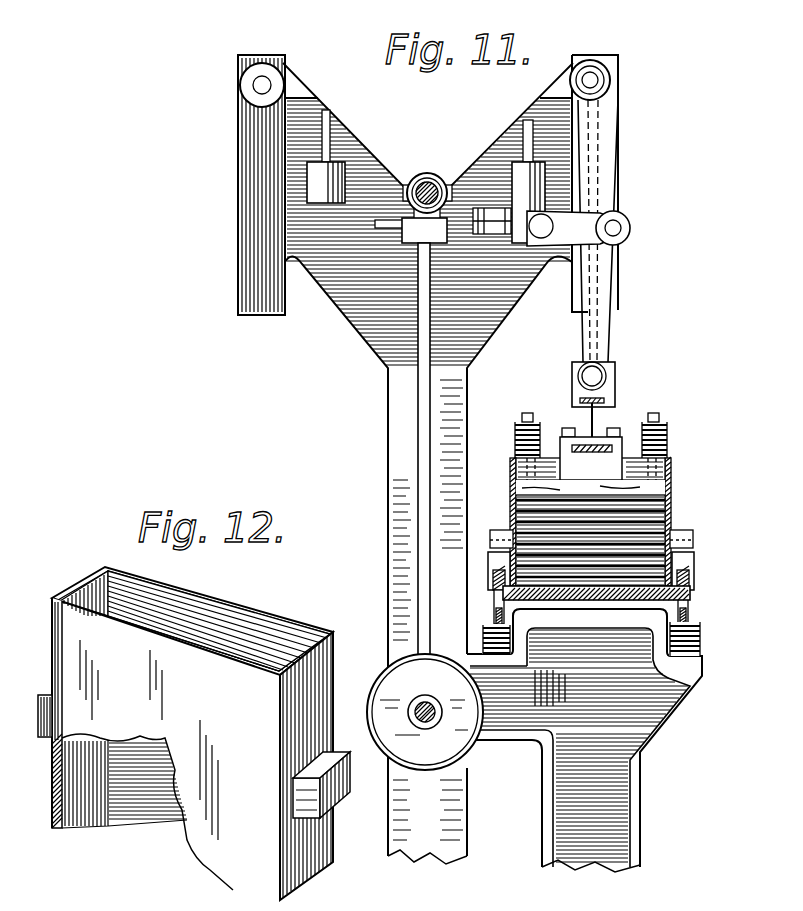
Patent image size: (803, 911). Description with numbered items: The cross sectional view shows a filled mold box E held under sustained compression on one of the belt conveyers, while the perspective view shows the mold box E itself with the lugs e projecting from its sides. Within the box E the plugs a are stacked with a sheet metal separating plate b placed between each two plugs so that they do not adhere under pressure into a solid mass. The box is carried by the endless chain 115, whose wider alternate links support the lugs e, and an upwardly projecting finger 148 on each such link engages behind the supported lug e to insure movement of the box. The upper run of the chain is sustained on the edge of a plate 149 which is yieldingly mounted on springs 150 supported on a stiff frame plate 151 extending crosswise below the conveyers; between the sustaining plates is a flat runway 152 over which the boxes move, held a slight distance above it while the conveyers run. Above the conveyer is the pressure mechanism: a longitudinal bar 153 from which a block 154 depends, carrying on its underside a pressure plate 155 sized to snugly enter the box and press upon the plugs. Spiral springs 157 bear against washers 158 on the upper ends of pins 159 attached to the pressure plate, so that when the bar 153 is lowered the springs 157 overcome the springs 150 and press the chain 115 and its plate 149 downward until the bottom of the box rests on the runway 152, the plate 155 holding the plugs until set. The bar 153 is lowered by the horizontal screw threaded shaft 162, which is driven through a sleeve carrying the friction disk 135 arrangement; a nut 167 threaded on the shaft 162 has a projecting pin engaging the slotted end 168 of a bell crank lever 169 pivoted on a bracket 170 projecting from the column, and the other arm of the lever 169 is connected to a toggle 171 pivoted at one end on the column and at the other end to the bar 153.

In FIG. 11, the friction disk 135 is at (455, 738).
In FIG. 11, the upwardly projecting finger 148 is at (495, 548).
In FIG. 11, the plate 149 is at (500, 582).
In FIG. 11, the endless chain 115 is at (705, 575).
In FIG. 11, the spring 150 is at (505, 642).
In FIG. 11, the frame plate 151 is at (655, 733).
In FIG. 11, the runway 152 is at (612, 600).
In FIG. 11, the longitudinal bar 153 is at (600, 420).
In FIG. 11, the block 154 is at (591, 454).
In FIG. 11, the pressure plate 155 is at (672, 490).
In FIG. 11, the spiral spring 157 is at (517, 437).
In FIG. 11, the washer 158 is at (520, 424).
In FIG. 11, the pin 159 is at (512, 468).
In FIG. 11, the horizontal screw threaded shaft 162 is at (427, 183).
In FIG. 11, the nut 167 is at (418, 182).
In FIG. 11, the slotted end 168 is at (414, 251).
In FIG. 11, the bell crank lever 169 is at (527, 216).
In FIG. 11, the bracket 170 is at (318, 186).
In FIG. 11, the toggle 171 is at (618, 208).
In FIG. 11, the plug a is at (672, 518).
In FIG. 11, the separating plate b is at (520, 510).
In FIG. 11, the lug e is at (495, 548).
In FIG. 12, the lug e is at (40, 712).
In FIG. 12, the form box E is at (192, 733).